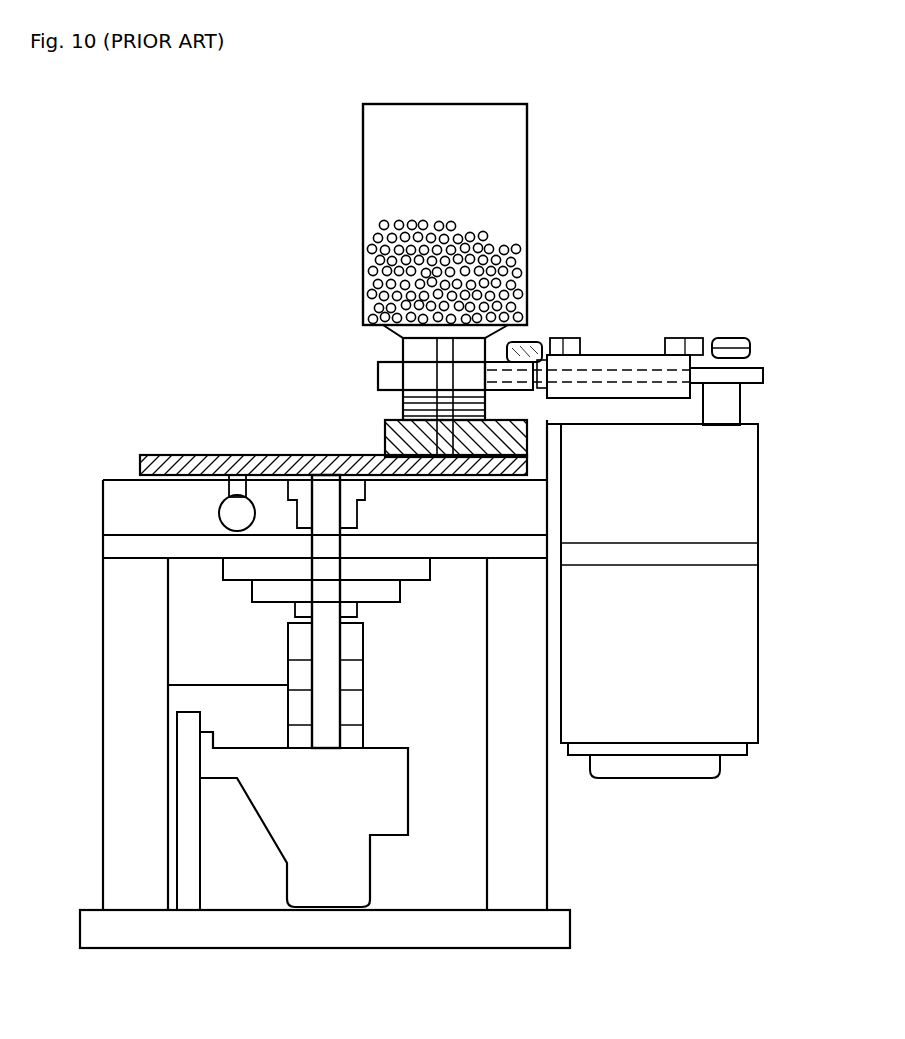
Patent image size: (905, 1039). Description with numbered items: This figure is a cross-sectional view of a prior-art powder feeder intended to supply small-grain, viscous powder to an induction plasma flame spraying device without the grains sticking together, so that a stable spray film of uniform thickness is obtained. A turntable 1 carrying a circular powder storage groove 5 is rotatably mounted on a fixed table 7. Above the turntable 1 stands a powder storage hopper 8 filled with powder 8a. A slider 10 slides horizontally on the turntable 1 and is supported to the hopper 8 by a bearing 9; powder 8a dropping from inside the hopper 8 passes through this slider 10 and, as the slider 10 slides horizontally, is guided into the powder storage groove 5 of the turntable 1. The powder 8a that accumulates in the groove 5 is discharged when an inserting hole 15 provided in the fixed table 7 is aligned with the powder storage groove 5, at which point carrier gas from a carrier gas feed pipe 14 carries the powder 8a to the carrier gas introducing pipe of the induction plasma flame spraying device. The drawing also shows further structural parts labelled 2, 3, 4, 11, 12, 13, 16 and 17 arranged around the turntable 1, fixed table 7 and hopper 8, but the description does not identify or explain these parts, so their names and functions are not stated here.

The turntable 1 is at (186, 455).
The lifting body 2 is at (403, 835).
The support block 3 is at (390, 592).
The bearing stack 4 is at (330, 673).
The powder storage groove 5 is at (240, 455).
The fixed table 7 is at (120, 498).
The powder storage hopper 8 is at (517, 152).
The powder 8a is at (517, 257).
The bearing 9 is at (378, 372).
The slider 10 is at (385, 440).
The motor 11 is at (742, 650).
The nut 12 is at (530, 345).
The feed tube 13 is at (560, 382).
The carrier gas feed pipe 14 is at (228, 516).
The inserting hole 15 is at (275, 455).
The threaded sleeve 16 is at (403, 405).
The bracket 17 is at (742, 398).